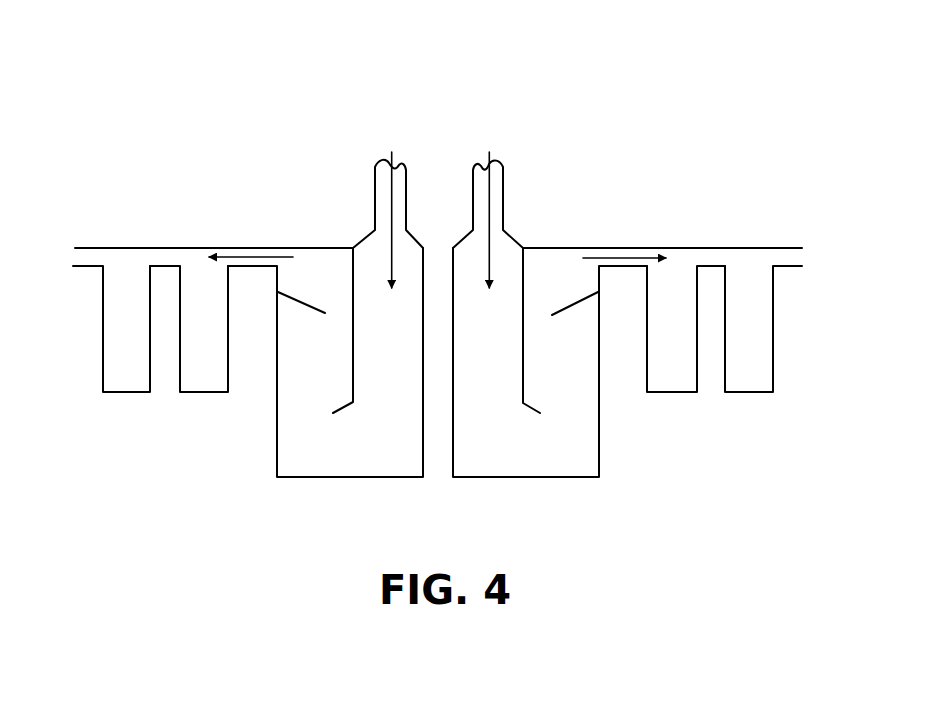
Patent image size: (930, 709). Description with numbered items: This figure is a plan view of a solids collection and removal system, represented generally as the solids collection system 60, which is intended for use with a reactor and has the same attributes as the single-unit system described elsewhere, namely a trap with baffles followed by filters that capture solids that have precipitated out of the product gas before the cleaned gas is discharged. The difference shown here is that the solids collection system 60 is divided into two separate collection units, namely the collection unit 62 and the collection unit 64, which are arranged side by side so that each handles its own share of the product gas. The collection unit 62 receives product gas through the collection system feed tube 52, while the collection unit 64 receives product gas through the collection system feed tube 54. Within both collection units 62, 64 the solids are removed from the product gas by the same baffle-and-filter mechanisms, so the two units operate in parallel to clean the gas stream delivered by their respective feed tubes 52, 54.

The solids collection system 60 is at (252, 56).
The collection unit 62 is at (204, 194).
The collection unit 64 is at (692, 192).
The collection system feed tube 52 is at (375, 190).
The collection system feed tube 54 is at (505, 183).